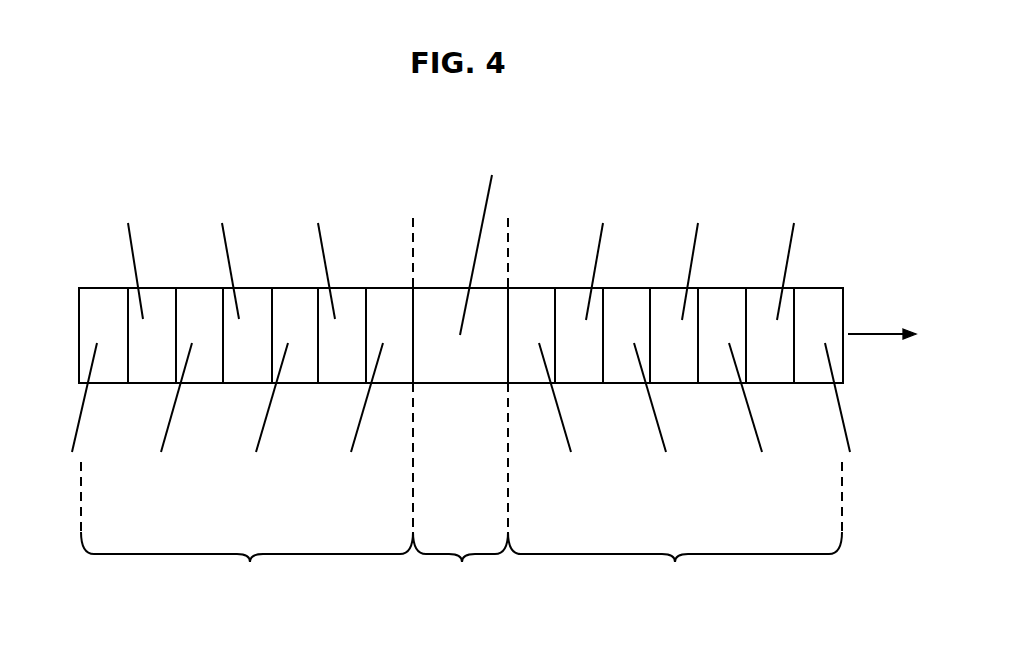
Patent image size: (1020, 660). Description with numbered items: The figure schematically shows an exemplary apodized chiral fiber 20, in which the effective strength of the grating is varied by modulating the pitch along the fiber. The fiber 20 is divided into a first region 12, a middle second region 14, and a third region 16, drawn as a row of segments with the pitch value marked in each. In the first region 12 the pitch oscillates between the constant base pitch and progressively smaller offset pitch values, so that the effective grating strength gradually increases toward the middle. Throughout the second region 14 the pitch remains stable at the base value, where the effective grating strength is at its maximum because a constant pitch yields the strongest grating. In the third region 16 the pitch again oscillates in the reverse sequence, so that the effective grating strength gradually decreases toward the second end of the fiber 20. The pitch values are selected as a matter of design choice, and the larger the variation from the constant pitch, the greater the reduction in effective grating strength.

The first region 12 is at (250, 560).
The second region 14 is at (462, 562).
The third region 16 is at (675, 562).
The apodized chiral fiber 20 is at (263, 150).